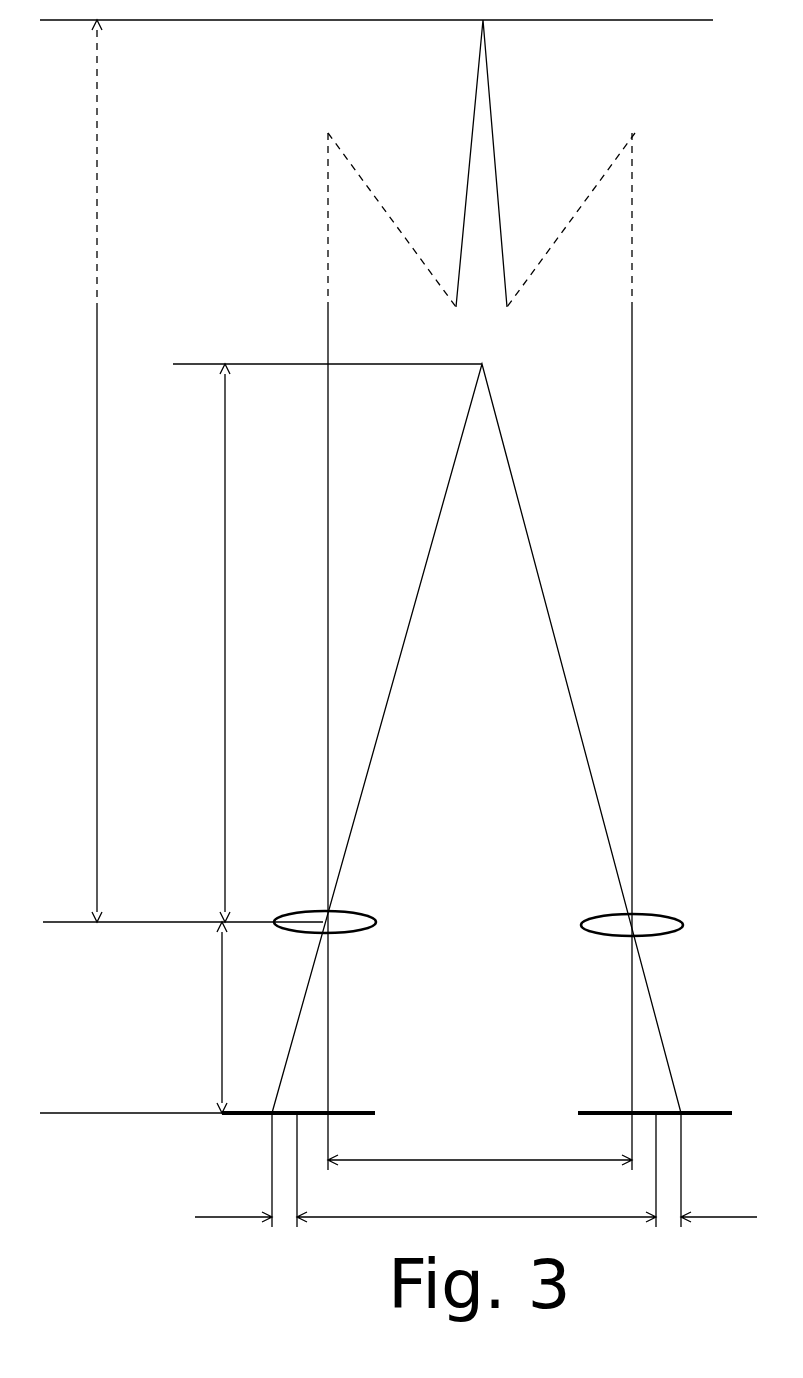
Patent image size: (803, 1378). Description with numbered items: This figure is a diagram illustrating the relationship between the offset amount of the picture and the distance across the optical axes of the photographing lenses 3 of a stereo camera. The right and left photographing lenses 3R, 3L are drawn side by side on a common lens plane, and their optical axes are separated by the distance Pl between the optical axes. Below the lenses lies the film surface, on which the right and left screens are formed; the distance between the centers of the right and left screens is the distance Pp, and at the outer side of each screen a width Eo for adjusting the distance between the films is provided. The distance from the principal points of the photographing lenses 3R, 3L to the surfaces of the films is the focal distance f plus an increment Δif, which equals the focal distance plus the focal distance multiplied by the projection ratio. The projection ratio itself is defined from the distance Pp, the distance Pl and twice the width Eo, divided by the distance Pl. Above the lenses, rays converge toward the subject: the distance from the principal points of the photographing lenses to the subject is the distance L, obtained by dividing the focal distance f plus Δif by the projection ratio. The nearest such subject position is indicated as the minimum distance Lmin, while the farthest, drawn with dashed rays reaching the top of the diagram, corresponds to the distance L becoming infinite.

The photographing lenses 3 is at (478, 933).
The left photographing lens 3L is at (376, 925).
The right photographing lens 3R is at (581, 928).
The distance to the subject L is at (80, 471).
The minimum distance to the subject Lmin is at (209, 643).
The focal distance f is at (206, 1017).
The distance between the optical axes Pl is at (480, 1148).
The distance between the centers of the right and left screens Pp is at (476, 1205).
The width for adjusting the distance between the films Eo is at (476, 1203).